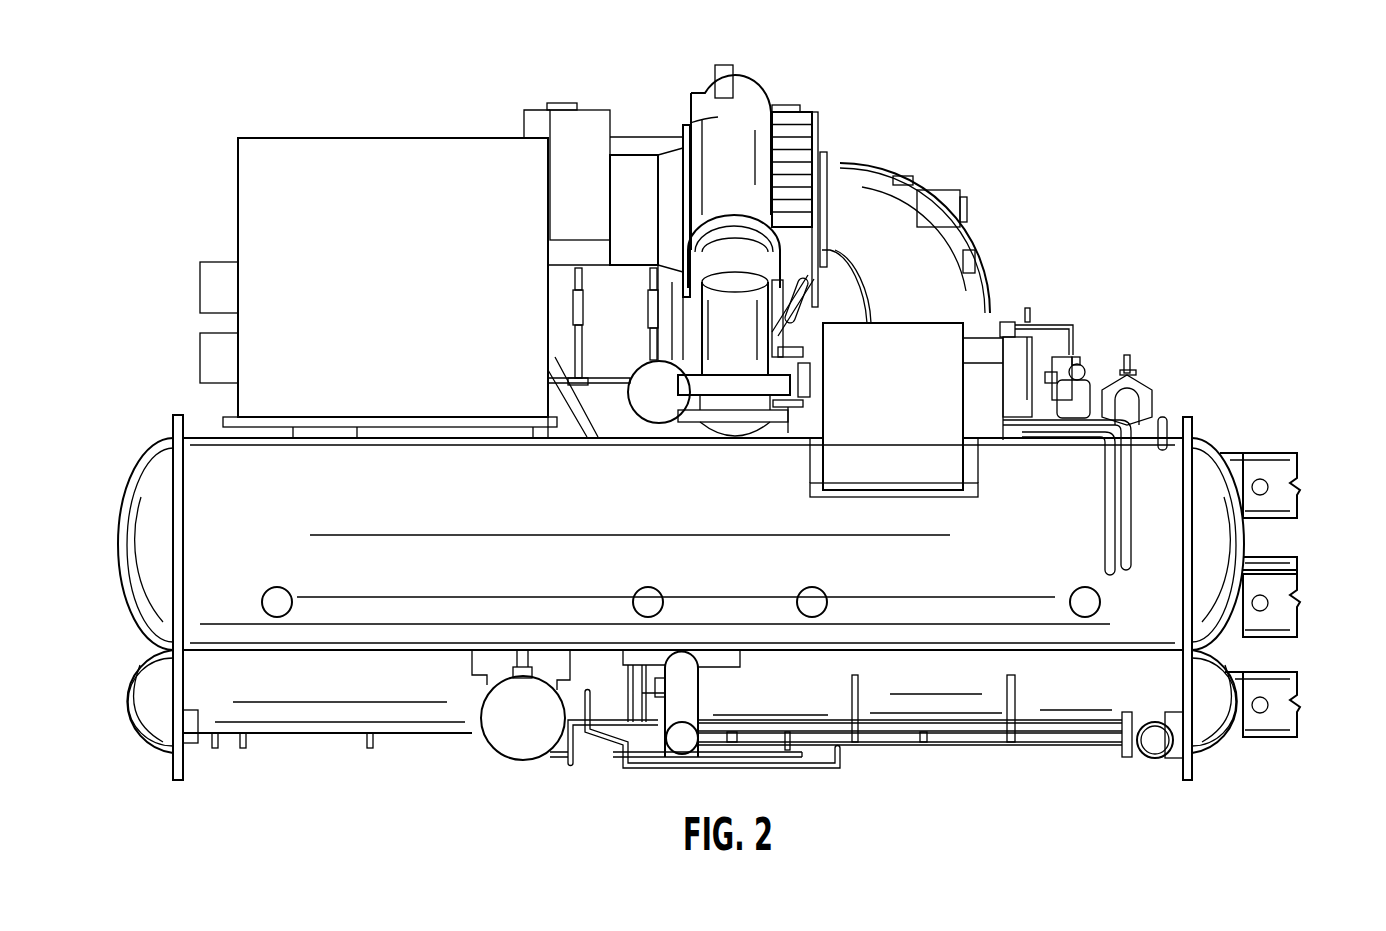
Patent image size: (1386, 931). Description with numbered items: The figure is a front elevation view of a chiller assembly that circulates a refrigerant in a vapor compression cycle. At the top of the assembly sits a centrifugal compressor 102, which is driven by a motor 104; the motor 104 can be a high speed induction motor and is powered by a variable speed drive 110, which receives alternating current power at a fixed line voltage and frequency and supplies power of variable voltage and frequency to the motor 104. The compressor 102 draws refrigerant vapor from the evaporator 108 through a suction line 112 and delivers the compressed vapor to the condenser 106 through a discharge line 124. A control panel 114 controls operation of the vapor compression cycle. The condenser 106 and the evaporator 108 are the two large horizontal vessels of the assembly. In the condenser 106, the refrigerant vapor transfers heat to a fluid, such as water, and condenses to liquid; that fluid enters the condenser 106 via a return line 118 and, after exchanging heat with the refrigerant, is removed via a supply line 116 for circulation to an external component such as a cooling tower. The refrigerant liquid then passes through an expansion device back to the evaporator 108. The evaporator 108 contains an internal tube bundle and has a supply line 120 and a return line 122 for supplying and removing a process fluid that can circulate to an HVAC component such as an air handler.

The compressor 102 is at (747, 85).
The motor 104 is at (632, 163).
The condenser 106 is at (203, 497).
The evaporator 108 is at (285, 683).
The variable speed drive 110 is at (378, 155).
The suction line 112 is at (900, 247).
The control panel 114 is at (935, 347).
The supply line 116 is at (1282, 465).
The return line 118 is at (1287, 613).
The supply line 120 is at (1287, 565).
The return line 122 is at (1283, 688).
The discharge line 124 is at (737, 318).